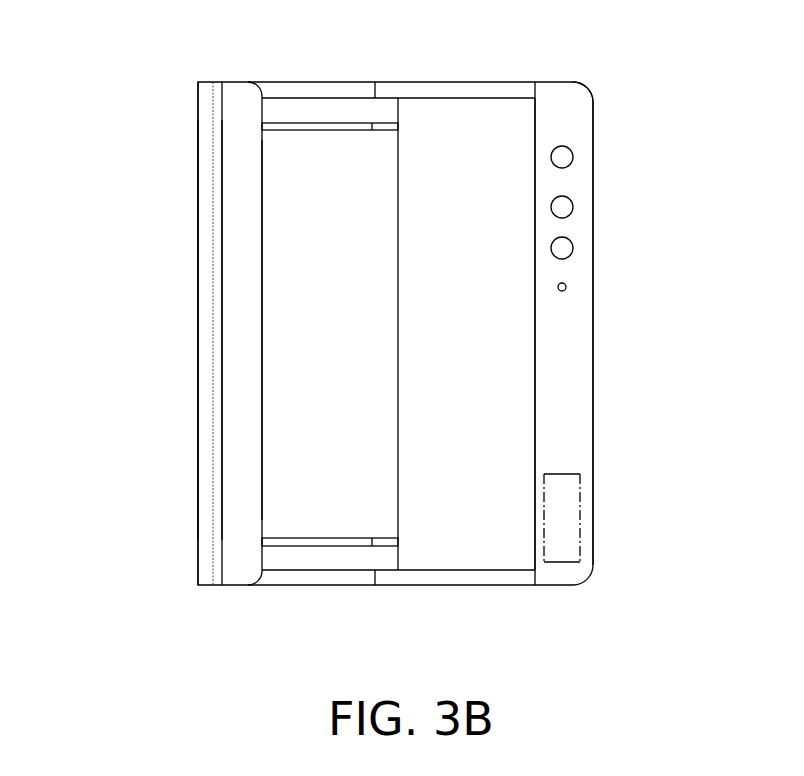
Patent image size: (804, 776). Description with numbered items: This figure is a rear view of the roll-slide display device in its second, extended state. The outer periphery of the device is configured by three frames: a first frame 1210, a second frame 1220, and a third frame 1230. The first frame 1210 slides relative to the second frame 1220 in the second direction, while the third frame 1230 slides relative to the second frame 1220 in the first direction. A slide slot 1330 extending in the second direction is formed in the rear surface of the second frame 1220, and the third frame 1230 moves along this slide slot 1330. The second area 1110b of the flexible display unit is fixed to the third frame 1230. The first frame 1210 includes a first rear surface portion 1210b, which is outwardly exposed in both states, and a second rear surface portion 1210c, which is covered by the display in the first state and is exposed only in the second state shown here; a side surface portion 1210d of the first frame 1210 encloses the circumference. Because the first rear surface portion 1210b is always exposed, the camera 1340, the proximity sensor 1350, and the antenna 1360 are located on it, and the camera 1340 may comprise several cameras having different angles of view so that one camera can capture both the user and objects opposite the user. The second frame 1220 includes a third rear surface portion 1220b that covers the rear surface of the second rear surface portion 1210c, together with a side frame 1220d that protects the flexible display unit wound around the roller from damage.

The second area 1110b is at (235, 160).
The first frame 1210 is at (702, 78).
The first rear surface portion 1210b is at (575, 108).
The second rear surface portion 1210c is at (518, 128).
The side surface portion 1210d is at (592, 83).
The second frame 1220 is at (85, 273).
The third rear surface portion 1220b is at (292, 332).
The side frame 1220d is at (205, 280).
The third frame 1230 is at (262, 90).
The slide slot 1330 is at (340, 123).
The camera 1340 is at (562, 157).
The proximity sensor 1350 is at (566, 287).
The antenna 1360 is at (563, 517).